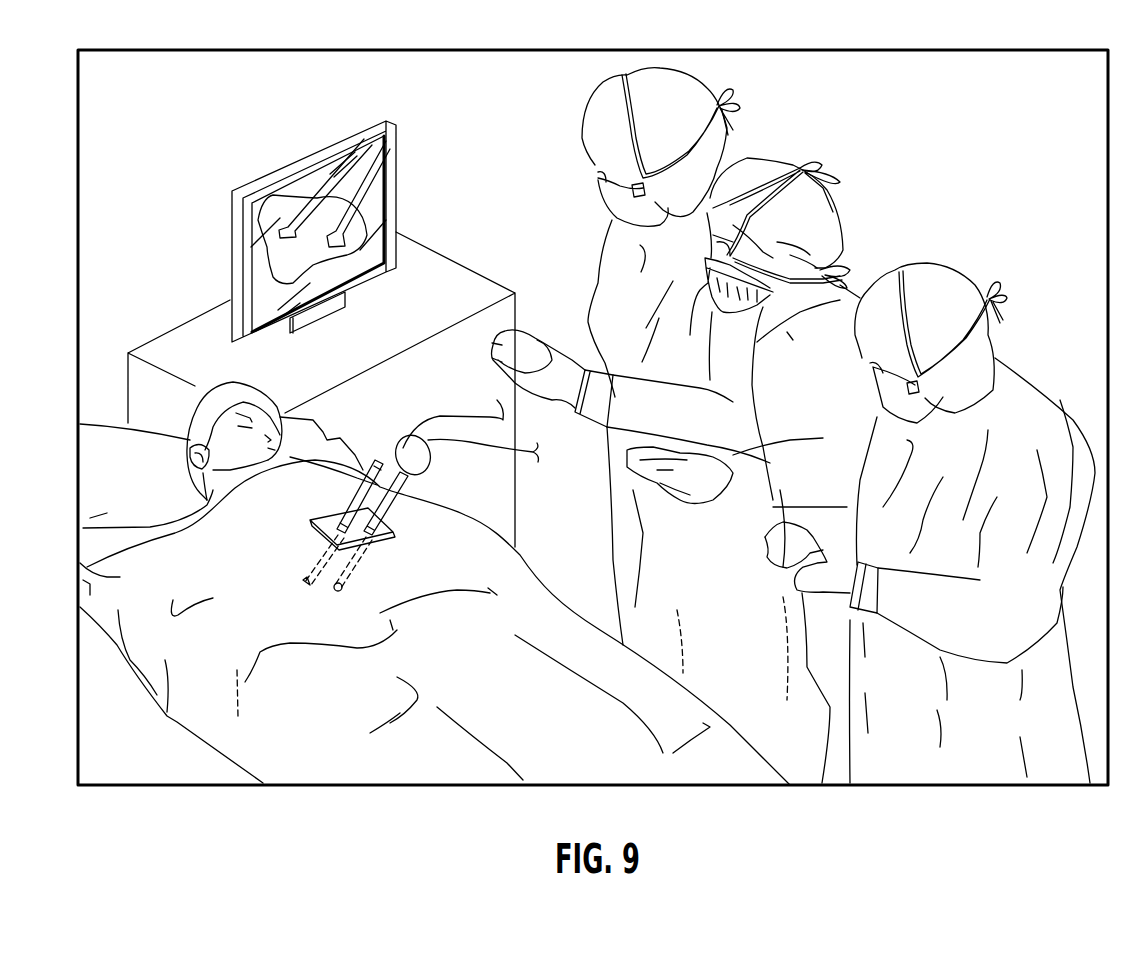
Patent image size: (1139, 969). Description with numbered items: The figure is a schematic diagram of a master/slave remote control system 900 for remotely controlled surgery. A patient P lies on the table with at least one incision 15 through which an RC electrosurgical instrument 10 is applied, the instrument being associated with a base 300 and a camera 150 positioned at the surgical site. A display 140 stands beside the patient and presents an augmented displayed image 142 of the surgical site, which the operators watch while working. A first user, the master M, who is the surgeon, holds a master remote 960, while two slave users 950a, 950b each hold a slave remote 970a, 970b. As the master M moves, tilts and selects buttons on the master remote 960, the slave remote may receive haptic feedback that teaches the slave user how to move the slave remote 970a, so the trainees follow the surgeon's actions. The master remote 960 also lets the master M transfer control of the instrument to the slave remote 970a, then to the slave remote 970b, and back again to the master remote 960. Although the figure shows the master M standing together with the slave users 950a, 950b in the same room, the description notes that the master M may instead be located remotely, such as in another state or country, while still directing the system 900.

The master/slave remote control system 900 is at (186, 165).
The display 140 is at (308, 158).
The augmented displayed image 142 is at (350, 183).
The camera 150 is at (357, 498).
The base 300 is at (418, 462).
The RC electrosurgical instrument 10 is at (385, 518).
The incision 15 is at (335, 590).
The master remote 960 is at (492, 347).
The slave remote 970a is at (635, 465).
The slave remote 970b is at (767, 550).
The slave user 950a is at (852, 186).
The slave user 950b is at (1005, 282).
The master M is at (746, 106).
The patient P is at (241, 648).